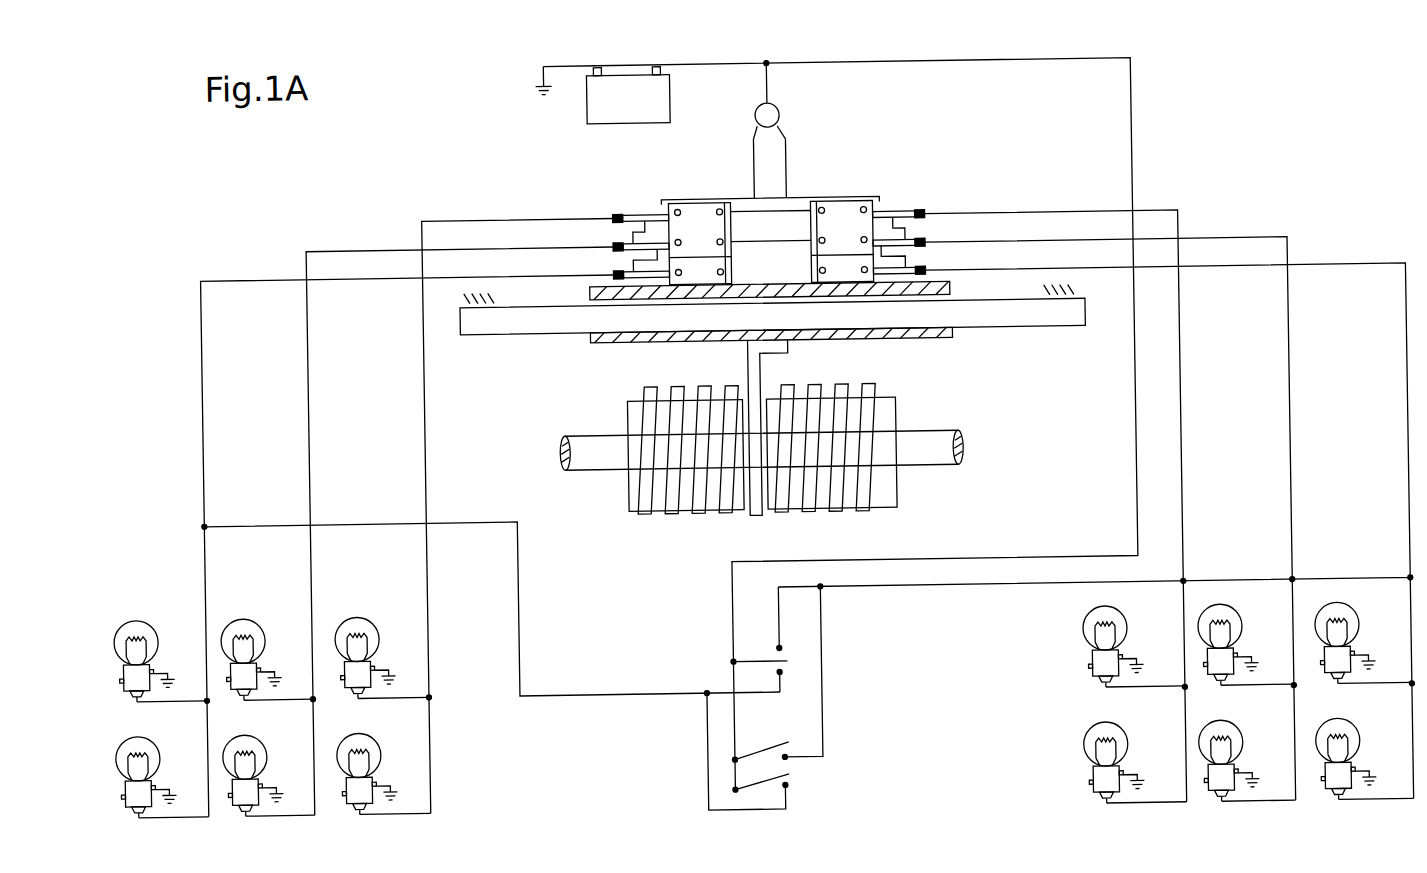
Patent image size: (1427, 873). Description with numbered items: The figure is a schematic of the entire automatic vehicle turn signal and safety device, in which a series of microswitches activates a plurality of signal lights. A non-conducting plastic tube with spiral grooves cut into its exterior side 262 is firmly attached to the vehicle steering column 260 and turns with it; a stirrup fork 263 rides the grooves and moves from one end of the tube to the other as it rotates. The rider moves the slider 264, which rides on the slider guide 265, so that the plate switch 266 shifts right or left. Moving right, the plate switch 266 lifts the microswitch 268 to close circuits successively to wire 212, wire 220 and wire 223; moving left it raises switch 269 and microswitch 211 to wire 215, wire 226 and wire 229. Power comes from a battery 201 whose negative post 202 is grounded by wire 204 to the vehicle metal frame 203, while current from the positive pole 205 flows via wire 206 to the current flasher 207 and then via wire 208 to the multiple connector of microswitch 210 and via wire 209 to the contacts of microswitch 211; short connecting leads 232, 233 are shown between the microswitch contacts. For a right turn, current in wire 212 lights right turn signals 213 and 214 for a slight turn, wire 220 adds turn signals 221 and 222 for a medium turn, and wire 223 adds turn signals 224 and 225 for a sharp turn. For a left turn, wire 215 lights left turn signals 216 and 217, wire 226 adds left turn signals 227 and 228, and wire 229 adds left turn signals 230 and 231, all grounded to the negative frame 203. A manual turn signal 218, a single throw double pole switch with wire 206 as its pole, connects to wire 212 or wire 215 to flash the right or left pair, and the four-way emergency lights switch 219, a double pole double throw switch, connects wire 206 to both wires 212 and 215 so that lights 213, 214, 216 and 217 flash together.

The battery 201 is at (653, 116).
The negative post of the battery 202 is at (603, 66).
The vehicle metal frame 203 is at (542, 86).
The wire 204 is at (553, 64).
The positive pole 205 is at (662, 66).
The wire 206 is at (835, 64).
The current flasher 207 is at (784, 116).
The wire 208 is at (790, 168).
The wire 209 is at (758, 168).
The microswitch 210 is at (861, 237).
The microswitch 211 is at (724, 235).
The wire 212 is at (1036, 273).
The right turn signal 213 is at (1338, 616).
The right turn signal 214 is at (1344, 742).
The wire 215 is at (525, 273).
The left turn signal 216 is at (135, 613).
The left turn signal 217 is at (140, 730).
The manual turn signal 218 is at (759, 643).
The four-way emergency lights switch 219 is at (761, 739).
The wire 220 is at (1036, 245).
The turn signal 221 is at (1222, 614).
The turn signal 222 is at (1226, 742).
The wire 223 is at (1036, 217).
The turn signal 224 is at (1108, 613).
The turn signal 225 is at (1112, 740).
The wire 226 is at (525, 245).
The left turn signal 227 is at (241, 613).
The left turn signal 228 is at (250, 730).
The wire 229 is at (525, 217).
The left turn signal 230 is at (356, 613).
The left turn signal 231 is at (360, 731).
The connecting conductor 232 is at (812, 232).
The connecting conductor 233 is at (734, 256).
The vehicle steering column 260 is at (920, 434).
The plastic tube with spiral grooves 262 is at (675, 388).
The stirrup fork 263 is at (749, 366).
The slider 264 is at (952, 294).
The slider guide 265 is at (985, 331).
The plate switch 266 is at (668, 199).
The microswitch 268 is at (928, 213).
The switch 269 is at (616, 273).